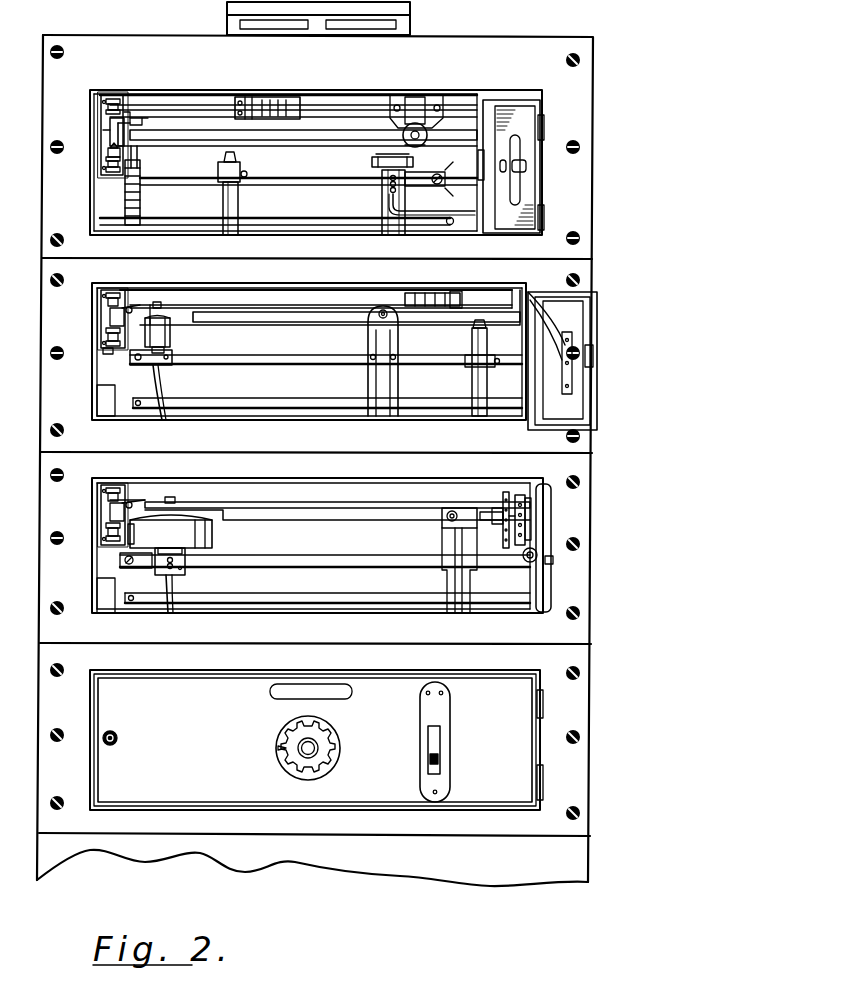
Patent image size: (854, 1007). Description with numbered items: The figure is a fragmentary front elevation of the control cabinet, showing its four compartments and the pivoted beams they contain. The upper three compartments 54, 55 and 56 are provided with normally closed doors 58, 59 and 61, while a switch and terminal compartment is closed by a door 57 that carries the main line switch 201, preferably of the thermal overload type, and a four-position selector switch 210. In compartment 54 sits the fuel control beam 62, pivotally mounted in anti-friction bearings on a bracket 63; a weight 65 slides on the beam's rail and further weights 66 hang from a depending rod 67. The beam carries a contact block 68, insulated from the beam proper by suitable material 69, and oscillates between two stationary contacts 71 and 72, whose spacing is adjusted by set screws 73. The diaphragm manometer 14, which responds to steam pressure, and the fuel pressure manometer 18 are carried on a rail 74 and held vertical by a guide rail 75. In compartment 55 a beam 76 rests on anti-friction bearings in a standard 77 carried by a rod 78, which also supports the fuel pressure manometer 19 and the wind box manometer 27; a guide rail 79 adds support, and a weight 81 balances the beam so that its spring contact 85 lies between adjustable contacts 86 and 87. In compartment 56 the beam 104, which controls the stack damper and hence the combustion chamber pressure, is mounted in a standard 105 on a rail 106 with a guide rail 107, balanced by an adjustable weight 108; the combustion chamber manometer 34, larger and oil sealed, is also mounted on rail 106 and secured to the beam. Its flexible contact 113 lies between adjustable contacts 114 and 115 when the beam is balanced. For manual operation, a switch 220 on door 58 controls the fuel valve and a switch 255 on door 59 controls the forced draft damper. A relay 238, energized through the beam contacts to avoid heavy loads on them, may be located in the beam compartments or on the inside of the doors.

The diaphragm manometer 14 is at (414, 162).
The manometer 18 is at (238, 200).
The manometer 19 is at (488, 390).
The manometer 27 is at (171, 340).
The manometer 34 is at (170, 555).
The compartment 54 is at (97, 196).
The compartment 55 is at (98, 374).
The compartment 56 is at (98, 567).
The door 57 is at (316, 740).
The door 58 is at (508, 108).
The door 59 is at (551, 310).
The door 61 is at (546, 510).
The fuel control beam 62 is at (181, 132).
The bracket 63 is at (416, 121).
The weight 65 is at (245, 98).
The weights 66 is at (146, 198).
The depending rod 67 is at (138, 158).
The contact block 68 is at (110, 137).
The insulating material 69 is at (125, 130).
The stationary contact 71 is at (103, 118).
The stationary contact 72 is at (108, 165).
The set screws 73 is at (106, 106).
The rail 74 is at (168, 178).
The guide rail 75 is at (339, 220).
The beam 76 is at (250, 320).
The standard 77 is at (399, 338).
The rod 78 is at (281, 364).
The guide rail 79 is at (290, 406).
The weight 81 is at (452, 293).
The spring contact 85 is at (130, 306).
The adjustable contact 86 is at (112, 292).
The adjustable contact 87 is at (110, 358).
The beam 104 is at (325, 508).
The standard 105 is at (477, 546).
The rail 106 is at (368, 564).
The guide rail 107 is at (290, 602).
The weight 108 is at (520, 495).
The flexible contact 113 is at (130, 502).
The adjustable contact 114 is at (114, 487).
The adjustable contact 115 is at (120, 545).
The main line switch 201 is at (442, 757).
The selector switch 210 is at (340, 760).
The switch 220 is at (526, 166).
The relay 238 is at (98, 402).
The switch 255 is at (578, 328).